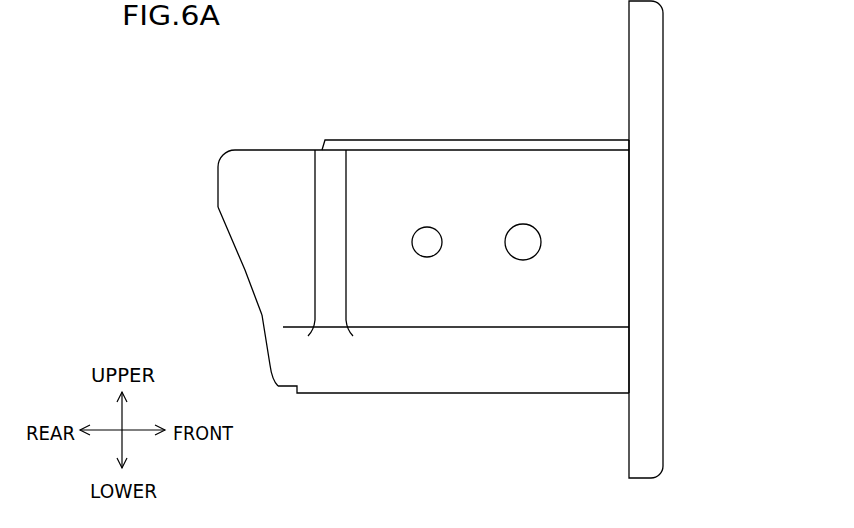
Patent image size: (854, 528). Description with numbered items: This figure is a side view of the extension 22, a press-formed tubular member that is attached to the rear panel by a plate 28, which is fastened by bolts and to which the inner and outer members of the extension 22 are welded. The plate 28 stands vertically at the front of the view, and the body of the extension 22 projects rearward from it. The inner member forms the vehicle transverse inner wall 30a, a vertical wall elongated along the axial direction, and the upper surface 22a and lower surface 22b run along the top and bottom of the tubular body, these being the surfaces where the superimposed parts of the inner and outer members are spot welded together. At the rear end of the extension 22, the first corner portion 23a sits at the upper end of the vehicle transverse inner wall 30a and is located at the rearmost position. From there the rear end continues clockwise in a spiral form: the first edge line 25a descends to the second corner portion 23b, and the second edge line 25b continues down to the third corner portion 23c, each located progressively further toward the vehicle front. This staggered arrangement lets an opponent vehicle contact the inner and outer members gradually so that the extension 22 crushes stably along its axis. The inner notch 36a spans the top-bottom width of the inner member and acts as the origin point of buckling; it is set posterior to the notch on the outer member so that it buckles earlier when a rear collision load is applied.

The extension 22 is at (702, 51).
The plate 28 is at (672, 156).
The upper surface 22a is at (538, 150).
The lower surface 22b is at (492, 394).
The first corner portion 23a is at (228, 155).
The second corner portion 23b is at (262, 315).
The third corner portion 23c is at (277, 392).
The first edge line 25a is at (234, 245).
The second edge line 25b is at (268, 350).
The vehicle transverse inner wall 30a is at (385, 242).
The inner notch 36a is at (326, 243).